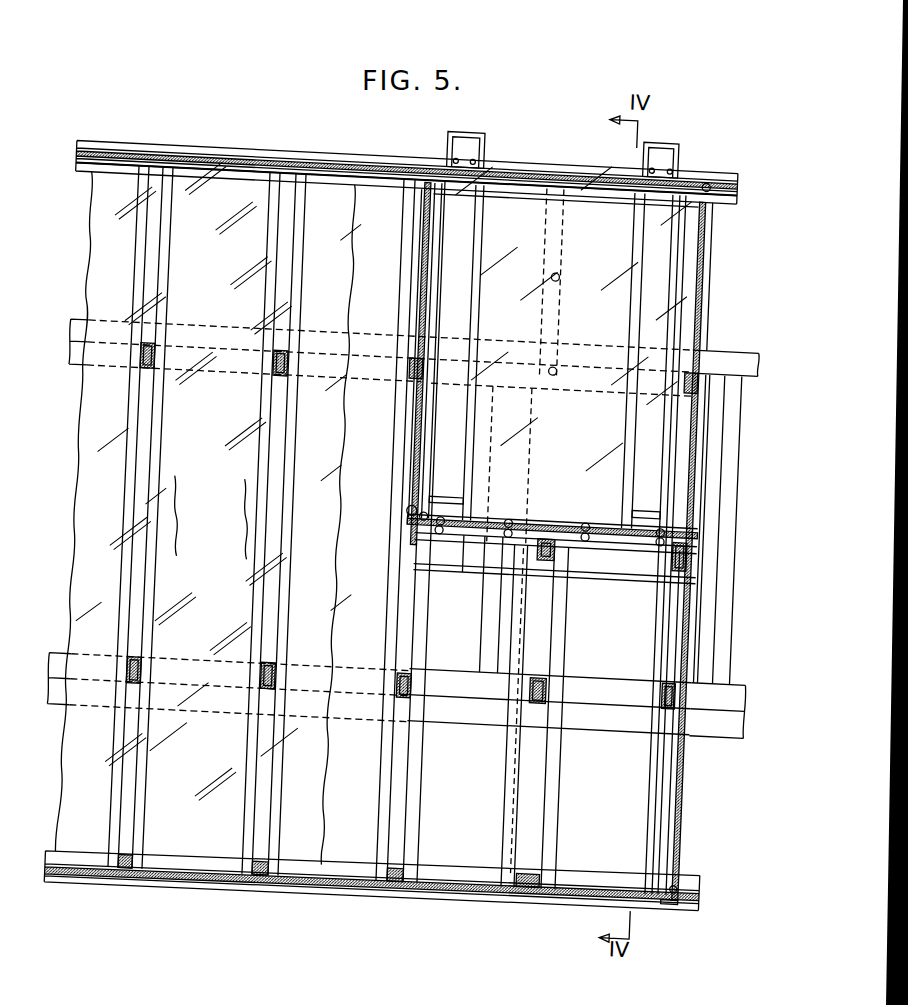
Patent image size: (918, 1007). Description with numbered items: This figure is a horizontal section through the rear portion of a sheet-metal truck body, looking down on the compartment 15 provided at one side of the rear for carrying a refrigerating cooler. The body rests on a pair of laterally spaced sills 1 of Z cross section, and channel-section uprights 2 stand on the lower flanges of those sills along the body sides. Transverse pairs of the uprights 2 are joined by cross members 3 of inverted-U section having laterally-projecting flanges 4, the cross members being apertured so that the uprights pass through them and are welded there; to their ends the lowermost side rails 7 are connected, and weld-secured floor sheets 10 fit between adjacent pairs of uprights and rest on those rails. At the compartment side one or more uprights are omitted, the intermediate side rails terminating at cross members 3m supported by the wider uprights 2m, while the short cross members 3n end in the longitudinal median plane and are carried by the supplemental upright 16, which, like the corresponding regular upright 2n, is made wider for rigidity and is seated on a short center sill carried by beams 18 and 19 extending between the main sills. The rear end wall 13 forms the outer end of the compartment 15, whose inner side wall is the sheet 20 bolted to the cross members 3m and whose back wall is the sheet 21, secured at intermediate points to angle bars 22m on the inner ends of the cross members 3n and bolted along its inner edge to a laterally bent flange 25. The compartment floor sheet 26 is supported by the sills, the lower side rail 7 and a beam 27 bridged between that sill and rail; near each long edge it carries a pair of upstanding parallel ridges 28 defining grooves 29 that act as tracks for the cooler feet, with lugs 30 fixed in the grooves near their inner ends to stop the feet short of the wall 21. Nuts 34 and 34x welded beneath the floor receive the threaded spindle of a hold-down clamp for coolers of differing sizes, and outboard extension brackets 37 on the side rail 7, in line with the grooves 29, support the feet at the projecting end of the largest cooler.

The sills 1 is at (82, 321).
The uprights 2 is at (149, 356).
The uprights 2m is at (418, 352).
The upright 2n is at (552, 668).
The cross members 3 is at (255, 508).
The cross members 3m is at (422, 417).
The cross members 3n is at (426, 577).
The laterally-projecting flanges 4 is at (132, 571).
The side rails 7 is at (331, 141).
The floor sheets 10 is at (110, 520).
The rear end wall 13 is at (711, 575).
The compartment 15 is at (569, 317).
The supplemental upright 16 is at (575, 528).
The beam 18 is at (504, 583).
The beam 19 is at (749, 463).
The sheet 20 is at (420, 247).
The sheet 21 is at (583, 498).
The angle bars 22m is at (486, 512).
The laterally bent flange 25 is at (422, 494).
The floor sheet 26 is at (595, 158).
The beam 27 is at (560, 214).
The upstanding parallel ridges 28 is at (452, 296).
The grooves 29 is at (469, 219).
The lugs 30 is at (466, 480).
The nut 34 is at (568, 352).
The nut 34x is at (556, 252).
The outboard extension brackets 37 is at (461, 113).